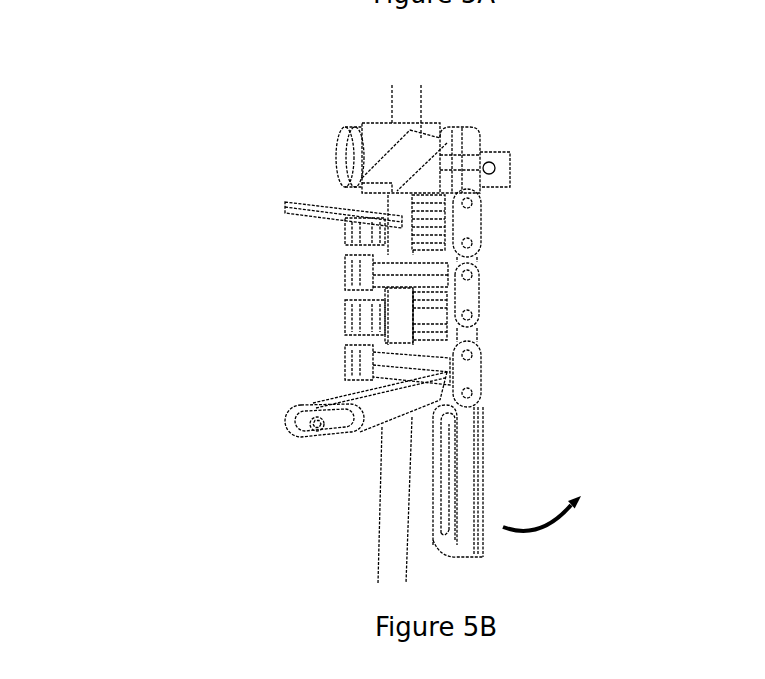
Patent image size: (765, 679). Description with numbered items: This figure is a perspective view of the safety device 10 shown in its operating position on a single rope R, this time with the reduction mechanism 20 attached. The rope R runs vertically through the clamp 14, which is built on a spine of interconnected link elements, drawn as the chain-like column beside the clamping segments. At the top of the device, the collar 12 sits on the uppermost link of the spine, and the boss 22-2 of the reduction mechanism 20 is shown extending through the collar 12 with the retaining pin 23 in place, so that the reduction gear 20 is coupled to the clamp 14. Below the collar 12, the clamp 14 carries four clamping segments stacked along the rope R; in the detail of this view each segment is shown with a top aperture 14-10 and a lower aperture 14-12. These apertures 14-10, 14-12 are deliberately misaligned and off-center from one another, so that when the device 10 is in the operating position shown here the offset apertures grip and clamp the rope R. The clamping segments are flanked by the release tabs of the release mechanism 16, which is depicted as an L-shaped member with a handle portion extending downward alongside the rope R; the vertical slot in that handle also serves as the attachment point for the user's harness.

The safety device 10 is at (113, 74).
The single rope R is at (413, 98).
The reduction mechanism 20 is at (380, 140).
The collar 12 is at (463, 133).
The boss 22-2 is at (490, 180).
The retaining pin 23 is at (492, 168).
The clamp 14 is at (208, 305).
The lower aperture 14-12 is at (387, 322).
The top aperture 14-10 is at (435, 312).
The release mechanism 16 is at (259, 424).